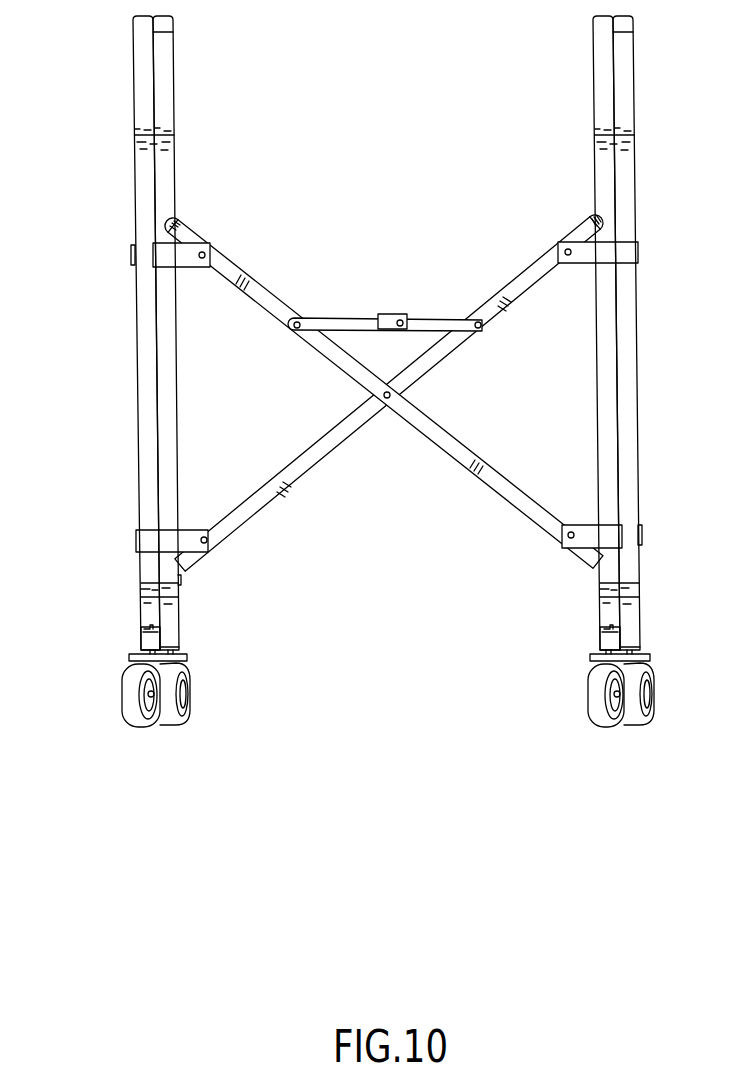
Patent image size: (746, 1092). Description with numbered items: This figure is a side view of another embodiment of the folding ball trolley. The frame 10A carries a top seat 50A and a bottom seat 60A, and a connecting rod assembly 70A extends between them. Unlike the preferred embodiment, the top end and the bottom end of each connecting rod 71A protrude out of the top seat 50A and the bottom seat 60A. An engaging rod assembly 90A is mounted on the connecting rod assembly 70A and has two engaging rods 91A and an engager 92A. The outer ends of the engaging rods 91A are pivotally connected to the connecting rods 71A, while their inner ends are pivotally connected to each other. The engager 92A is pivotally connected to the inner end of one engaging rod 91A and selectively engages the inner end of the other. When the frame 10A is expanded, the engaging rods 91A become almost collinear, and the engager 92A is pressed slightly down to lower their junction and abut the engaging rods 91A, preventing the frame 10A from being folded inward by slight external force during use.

The frame 10A is at (108, 92).
The top seat 50A is at (165, 258).
The bottom seat 60A is at (155, 536).
The connecting rod assembly 70A is at (415, 452).
The connecting rod 71A is at (238, 278).
The engaging rod assembly 90A is at (406, 298).
The engaging rod 91A is at (425, 318).
The engager 92A is at (392, 316).